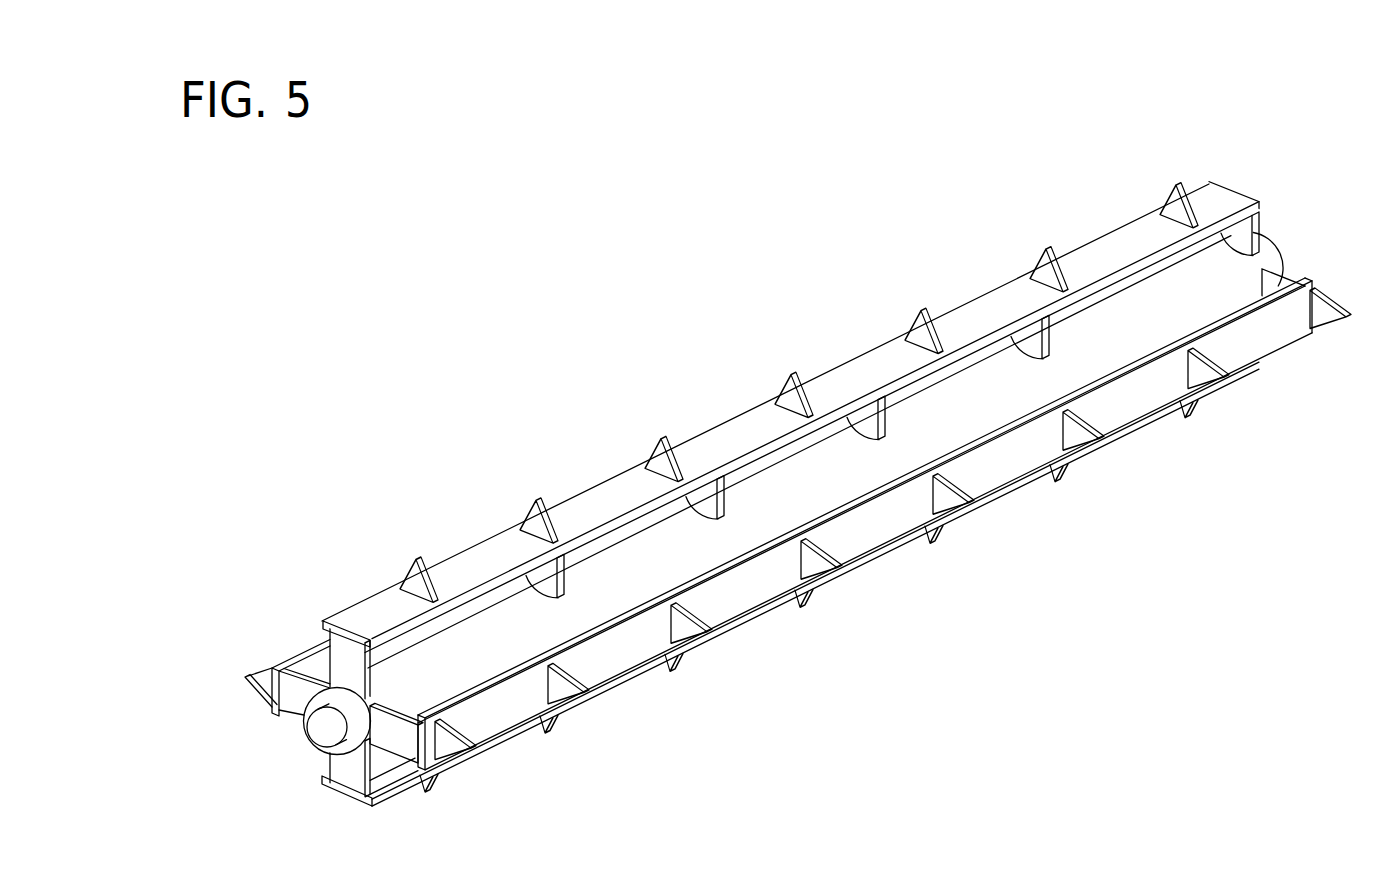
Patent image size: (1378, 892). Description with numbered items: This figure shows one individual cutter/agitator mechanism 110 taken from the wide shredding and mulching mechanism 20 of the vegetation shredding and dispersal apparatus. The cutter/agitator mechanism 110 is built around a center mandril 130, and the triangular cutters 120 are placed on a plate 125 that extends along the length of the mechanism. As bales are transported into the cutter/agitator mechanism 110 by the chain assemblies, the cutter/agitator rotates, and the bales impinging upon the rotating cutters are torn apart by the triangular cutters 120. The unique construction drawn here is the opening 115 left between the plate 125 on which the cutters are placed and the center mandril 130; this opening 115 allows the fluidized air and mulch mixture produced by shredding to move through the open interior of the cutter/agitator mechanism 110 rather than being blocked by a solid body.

The shredding and mulching mechanism 20 is at (580, 311).
The cutter/agitator mechanism 110 is at (312, 737).
The opening 115 is at (1132, 283).
The triangular cutters 120 is at (660, 450).
The plate 125 is at (290, 658).
The center mandril 130 is at (458, 653).